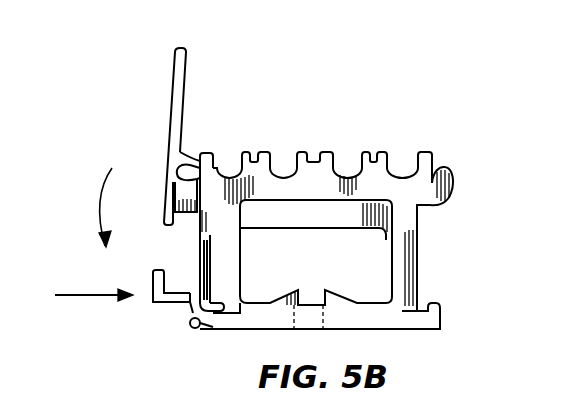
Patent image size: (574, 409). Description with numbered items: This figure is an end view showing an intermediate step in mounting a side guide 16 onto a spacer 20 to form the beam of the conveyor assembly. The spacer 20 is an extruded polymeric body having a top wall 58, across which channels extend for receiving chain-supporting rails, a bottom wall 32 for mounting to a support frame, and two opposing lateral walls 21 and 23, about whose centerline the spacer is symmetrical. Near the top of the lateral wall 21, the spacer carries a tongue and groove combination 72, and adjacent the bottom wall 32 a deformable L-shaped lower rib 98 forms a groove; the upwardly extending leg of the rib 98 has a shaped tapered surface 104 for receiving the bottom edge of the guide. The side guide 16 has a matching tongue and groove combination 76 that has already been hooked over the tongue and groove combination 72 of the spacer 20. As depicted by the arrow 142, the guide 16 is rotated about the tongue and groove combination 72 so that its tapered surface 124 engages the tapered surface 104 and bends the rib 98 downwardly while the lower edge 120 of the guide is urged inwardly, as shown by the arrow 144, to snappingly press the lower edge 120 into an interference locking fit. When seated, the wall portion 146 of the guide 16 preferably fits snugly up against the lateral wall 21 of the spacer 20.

The side guide 16 is at (172, 98).
The spacer 20 is at (389, 240).
The lateral wall 21 is at (190, 267).
The lateral wall 23 is at (418, 263).
The bottom wall portion 32 is at (380, 330).
The top wall 58 is at (303, 152).
The tongue and groove combination 72 is at (218, 166).
The tongue and groove combination 76 is at (180, 158).
The L-shaped lower rib 98 is at (216, 326).
The tapered surface 104 is at (191, 327).
The lower edge 120 is at (182, 307).
The tapered surface 124 is at (190, 315).
The arrow 142 is at (100, 218).
The arrow 144 is at (86, 291).
The wall portion 146 is at (192, 240).